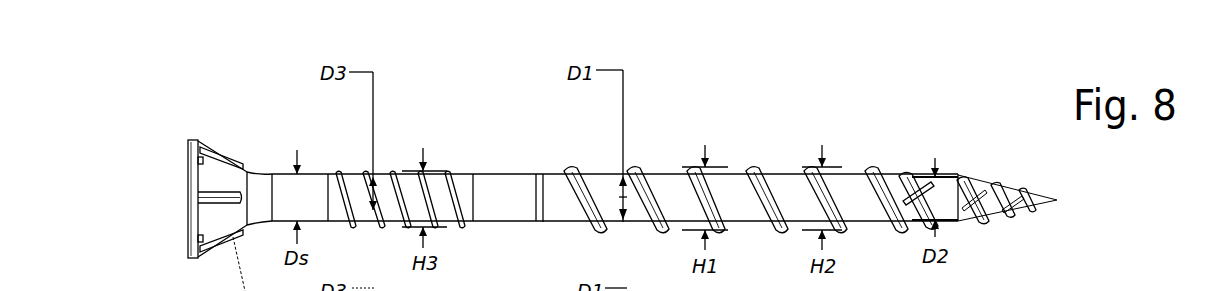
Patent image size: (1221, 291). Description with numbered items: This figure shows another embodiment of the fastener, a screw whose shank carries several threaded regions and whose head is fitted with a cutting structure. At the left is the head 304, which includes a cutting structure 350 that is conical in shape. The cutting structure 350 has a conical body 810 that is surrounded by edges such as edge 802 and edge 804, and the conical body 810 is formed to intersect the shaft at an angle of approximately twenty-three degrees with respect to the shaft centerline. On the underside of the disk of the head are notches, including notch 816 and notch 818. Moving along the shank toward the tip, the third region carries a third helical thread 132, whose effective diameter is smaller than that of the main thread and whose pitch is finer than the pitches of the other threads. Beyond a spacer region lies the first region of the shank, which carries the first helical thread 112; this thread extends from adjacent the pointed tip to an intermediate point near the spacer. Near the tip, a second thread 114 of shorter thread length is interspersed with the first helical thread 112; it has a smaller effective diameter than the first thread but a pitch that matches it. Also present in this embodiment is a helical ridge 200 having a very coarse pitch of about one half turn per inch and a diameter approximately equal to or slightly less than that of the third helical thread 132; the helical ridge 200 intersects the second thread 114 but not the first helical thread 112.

The head 304 is at (180, 188).
The notch 818 is at (200, 160).
The notch 816 is at (200, 238).
The cutting structure 350 is at (190, 171).
The conical body 810 is at (220, 177).
The edge 802 is at (231, 152).
The edge 804 is at (234, 193).
The third helical thread 132 is at (383, 170).
The first helical thread 112 is at (748, 165).
The second thread 114 is at (903, 172).
The helical ridge 200 is at (900, 172).